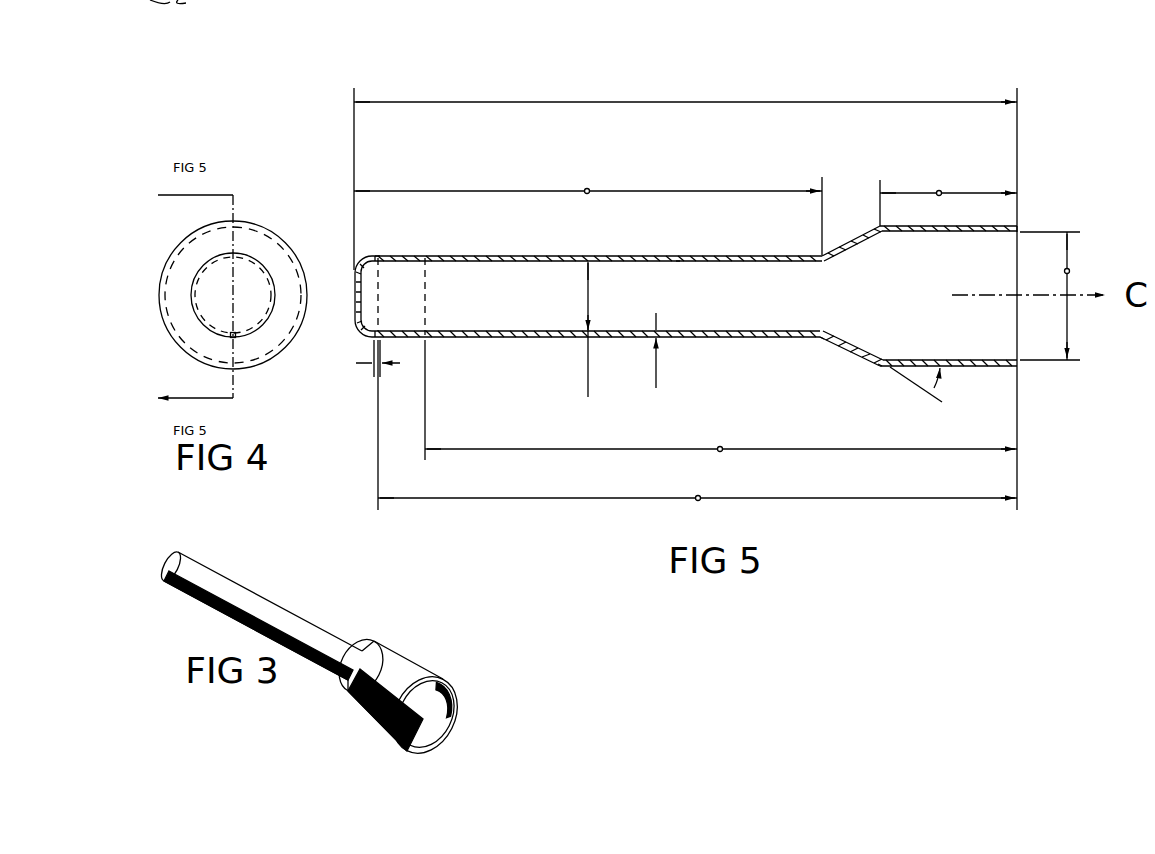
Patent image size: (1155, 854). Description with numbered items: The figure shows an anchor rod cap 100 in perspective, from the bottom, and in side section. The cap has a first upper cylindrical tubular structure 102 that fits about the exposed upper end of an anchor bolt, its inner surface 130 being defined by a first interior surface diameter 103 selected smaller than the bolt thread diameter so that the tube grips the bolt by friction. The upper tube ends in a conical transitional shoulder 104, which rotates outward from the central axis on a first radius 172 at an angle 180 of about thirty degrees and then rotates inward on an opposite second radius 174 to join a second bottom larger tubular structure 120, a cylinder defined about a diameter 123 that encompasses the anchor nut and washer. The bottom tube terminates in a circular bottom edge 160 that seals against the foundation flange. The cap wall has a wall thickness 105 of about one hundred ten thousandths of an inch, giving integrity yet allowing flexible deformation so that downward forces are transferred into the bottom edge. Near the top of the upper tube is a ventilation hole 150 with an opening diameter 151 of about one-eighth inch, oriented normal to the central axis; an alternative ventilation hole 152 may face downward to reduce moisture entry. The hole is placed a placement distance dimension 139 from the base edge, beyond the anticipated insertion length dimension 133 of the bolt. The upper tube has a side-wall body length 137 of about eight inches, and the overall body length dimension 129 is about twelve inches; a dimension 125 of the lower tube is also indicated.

In FIG. 4, the anchor rod cap 100 is at (270, 218).
In FIG. 5, the anchor rod cap 100 is at (723, 320).
In FIG. 3, the anchor rod cap 100 is at (307, 680).
In FIG. 5, the first upper cylindrical tubular structure 102 is at (470, 340).
In FIG. 3, the first upper cylindrical tubular structure 102 is at (254, 602).
In FIG. 5, the first interior surface diameter 103 is at (588, 397).
In FIG. 5, the conical transitional shoulder structure 104 is at (846, 352).
In FIG. 3, the conical transitional shoulder structure 104 is at (331, 688).
In FIG. 5, the wall thickness 105 is at (655, 360).
In FIG. 5, the second bottom larger tubular structure 120 is at (907, 223).
In FIG. 3, the second bottom larger tubular structure 120 is at (405, 705).
In FIG. 5, the diameter 123 is at (1070, 270).
In FIG. 5, the length of wide section 125 is at (942, 191).
In FIG. 5, the overall anchor cap body length dimension 129 is at (719, 99).
In FIG. 5, the inner surface 130 is at (675, 264).
In FIG. 5, the total possible insertion length dimension 133 is at (723, 446).
In FIG. 5, the side-wall body length value 137 is at (590, 189).
In FIG. 5, the placement distance dimension 139 is at (701, 500).
In FIG. 4, the ventilation hole 150 is at (237, 338).
In FIG. 5, the ventilation hole 150 is at (382, 329).
In FIG. 3, the ventilation hole 150 is at (162, 588).
In FIG. 5, the opening diameter 151 is at (356, 363).
In FIG. 5, the alternative ventilation hole 152 is at (385, 258).
In FIG. 5, the circular bottom edge 160 is at (1019, 228).
In FIG. 3, the circular bottom edge 160 is at (454, 672).
In FIG. 5, the first radius 172 is at (818, 343).
In FIG. 5, the second radius 174 is at (873, 368).
In FIG. 5, the angle 180 is at (934, 388).